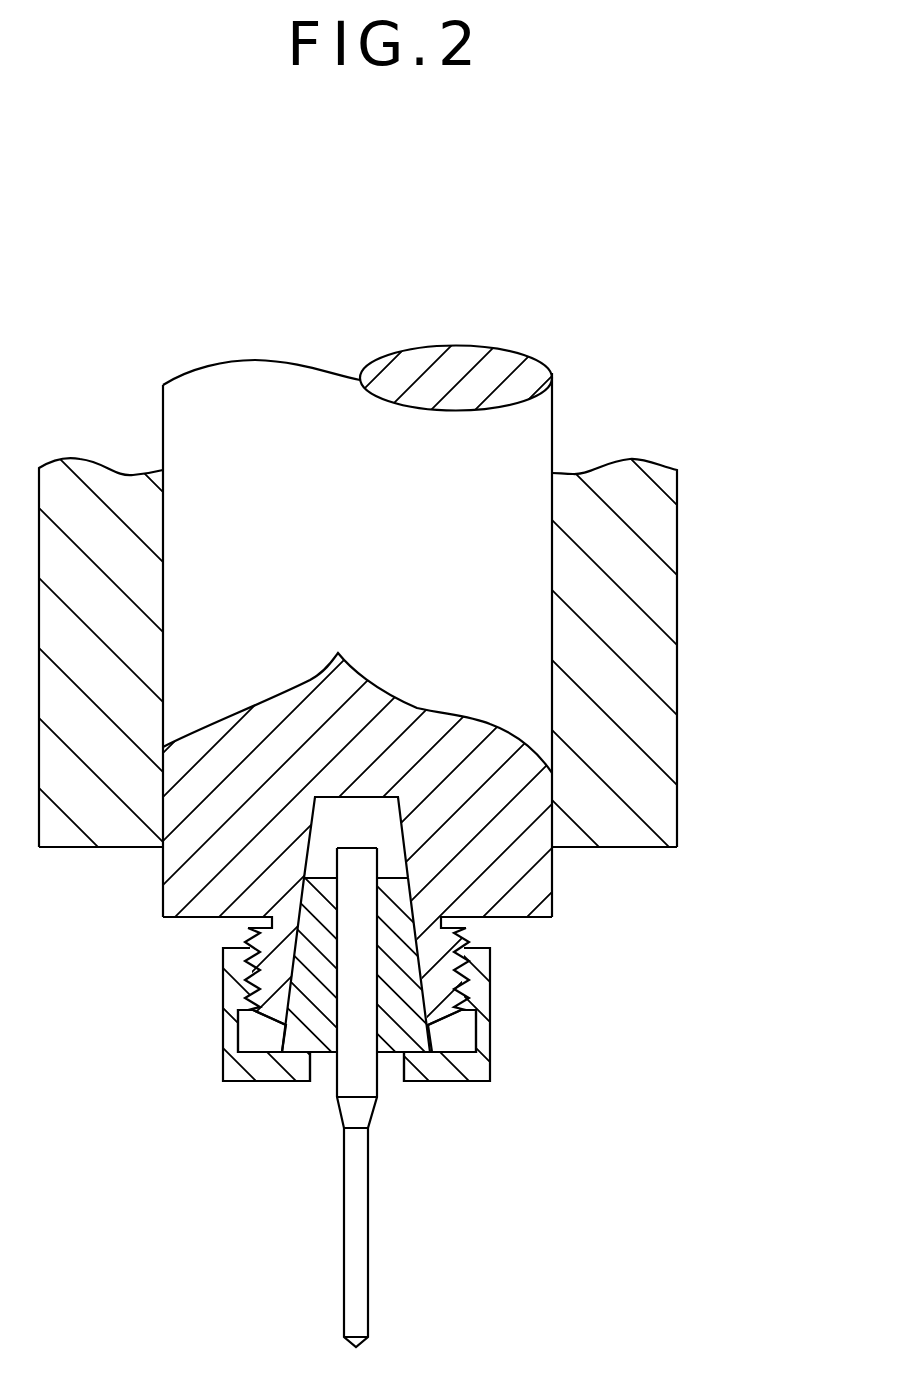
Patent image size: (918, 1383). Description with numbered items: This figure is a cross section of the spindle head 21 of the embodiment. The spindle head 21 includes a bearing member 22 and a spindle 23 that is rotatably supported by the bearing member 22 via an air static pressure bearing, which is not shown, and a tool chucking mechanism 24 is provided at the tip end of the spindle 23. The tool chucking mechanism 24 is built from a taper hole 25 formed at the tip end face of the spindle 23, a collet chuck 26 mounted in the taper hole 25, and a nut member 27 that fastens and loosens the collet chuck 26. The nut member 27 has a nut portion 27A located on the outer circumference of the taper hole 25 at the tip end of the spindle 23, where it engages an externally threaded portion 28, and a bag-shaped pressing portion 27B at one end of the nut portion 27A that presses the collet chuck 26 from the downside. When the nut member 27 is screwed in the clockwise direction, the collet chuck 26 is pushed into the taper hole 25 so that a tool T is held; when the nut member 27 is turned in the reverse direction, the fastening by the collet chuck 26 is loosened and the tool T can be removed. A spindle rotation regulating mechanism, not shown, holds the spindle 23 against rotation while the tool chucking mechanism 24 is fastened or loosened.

The spindle head 21 is at (707, 279).
The bearing member 22 is at (678, 608).
The spindle 23 is at (464, 358).
The tool chucking mechanism 24 is at (222, 972).
The taper hole 25 is at (403, 820).
The collet chuck 26 is at (413, 972).
The nut member 27 is at (483, 1059).
The nut portion 27A is at (232, 1016).
The pressing portion 27B is at (253, 1073).
The externally threaded portion 28 is at (466, 1000).
The tool T is at (368, 1203).